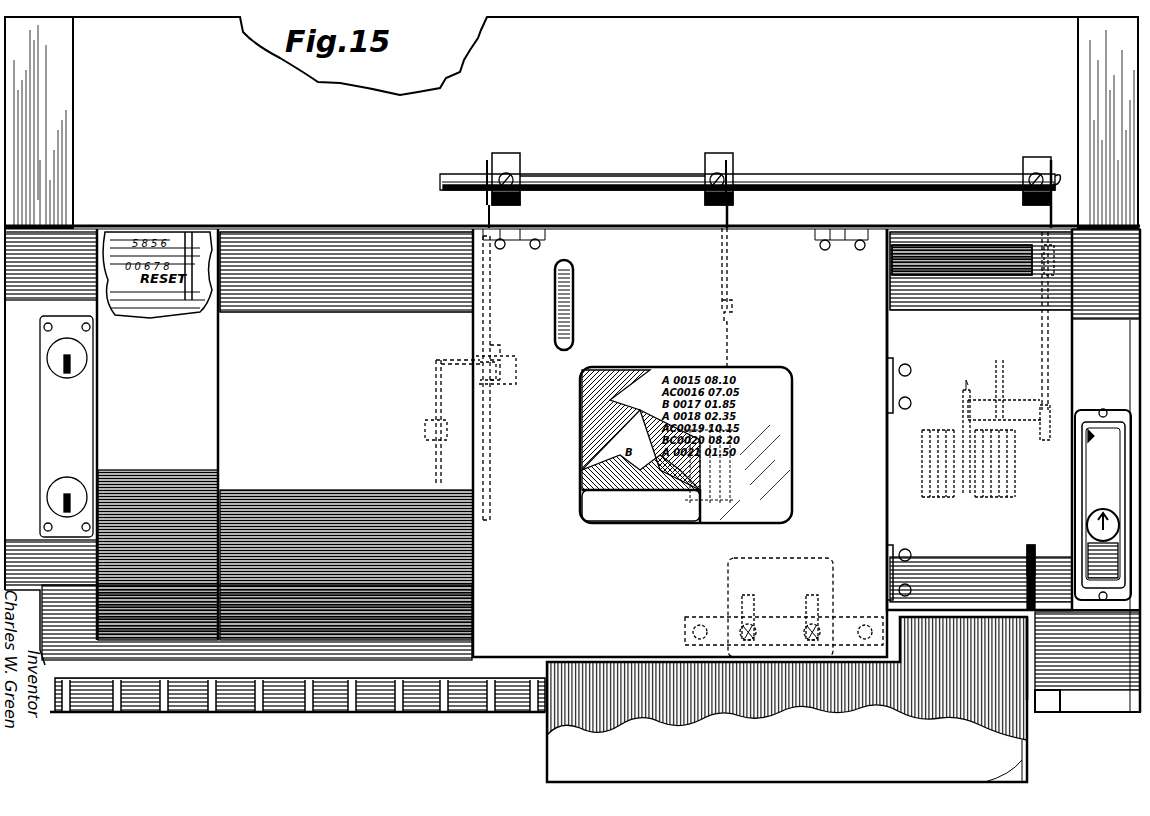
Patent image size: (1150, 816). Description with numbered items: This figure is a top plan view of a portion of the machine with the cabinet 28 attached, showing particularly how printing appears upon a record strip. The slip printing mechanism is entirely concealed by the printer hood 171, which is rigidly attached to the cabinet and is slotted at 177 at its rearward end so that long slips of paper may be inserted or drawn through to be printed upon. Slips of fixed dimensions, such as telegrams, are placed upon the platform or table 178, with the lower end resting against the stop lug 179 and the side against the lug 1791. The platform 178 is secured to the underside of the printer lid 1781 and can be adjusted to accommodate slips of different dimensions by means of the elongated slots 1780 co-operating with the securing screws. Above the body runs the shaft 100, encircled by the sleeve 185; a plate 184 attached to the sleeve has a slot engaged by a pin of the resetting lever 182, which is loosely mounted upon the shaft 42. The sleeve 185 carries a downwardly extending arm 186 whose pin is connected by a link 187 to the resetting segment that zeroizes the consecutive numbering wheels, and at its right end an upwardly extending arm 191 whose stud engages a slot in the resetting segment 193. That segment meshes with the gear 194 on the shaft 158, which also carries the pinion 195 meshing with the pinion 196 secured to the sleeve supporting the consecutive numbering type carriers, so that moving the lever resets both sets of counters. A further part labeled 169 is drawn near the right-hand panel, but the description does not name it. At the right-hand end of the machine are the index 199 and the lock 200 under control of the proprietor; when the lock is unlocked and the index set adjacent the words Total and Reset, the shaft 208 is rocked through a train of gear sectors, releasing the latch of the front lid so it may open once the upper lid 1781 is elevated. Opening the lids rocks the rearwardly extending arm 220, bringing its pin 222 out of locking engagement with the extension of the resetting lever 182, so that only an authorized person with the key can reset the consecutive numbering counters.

The shaft 100 is at (462, 175).
The sleeve 185 is at (580, 176).
The downwardly extending arm 186 is at (735, 170).
The plate 184 is at (487, 206).
The link 187 is at (730, 218).
The upwardly extending arm 191 is at (1048, 212).
The resetting lever 182 is at (490, 336).
The shaft 42 is at (508, 382).
The cabinet 28 is at (346, 295).
The pin 222 is at (450, 436).
The rearwardly extending arm 220 is at (432, 470).
The printer lid 1781 is at (680, 443).
The slot 177 is at (955, 275).
The resetting segment 193 is at (1040, 364).
The pinion 195 is at (980, 386).
The shaft 158 is at (1000, 400).
The gear 194 is at (1040, 410).
The index 199 is at (1087, 470).
The shaft 208 is at (1087, 478).
The printer hood 171 is at (979, 419).
The pinion 196 is at (968, 497).
The lever 169 is at (1027, 555).
The lock 200 is at (1090, 526).
The elongated slots 1780 is at (806, 605).
The platform 178 is at (787, 699).
The lug 1791 is at (1028, 735).
The stop lug 179 is at (1030, 760).